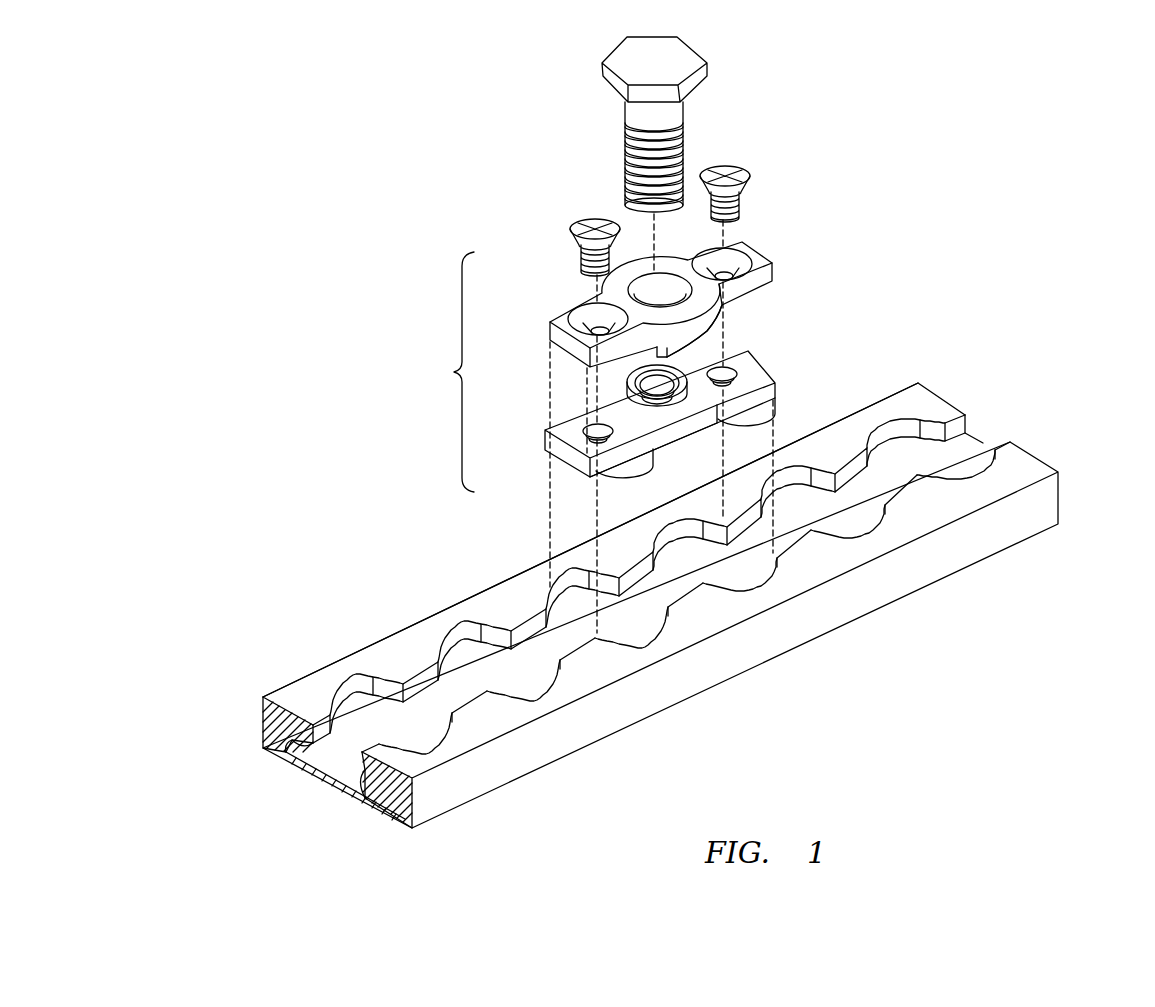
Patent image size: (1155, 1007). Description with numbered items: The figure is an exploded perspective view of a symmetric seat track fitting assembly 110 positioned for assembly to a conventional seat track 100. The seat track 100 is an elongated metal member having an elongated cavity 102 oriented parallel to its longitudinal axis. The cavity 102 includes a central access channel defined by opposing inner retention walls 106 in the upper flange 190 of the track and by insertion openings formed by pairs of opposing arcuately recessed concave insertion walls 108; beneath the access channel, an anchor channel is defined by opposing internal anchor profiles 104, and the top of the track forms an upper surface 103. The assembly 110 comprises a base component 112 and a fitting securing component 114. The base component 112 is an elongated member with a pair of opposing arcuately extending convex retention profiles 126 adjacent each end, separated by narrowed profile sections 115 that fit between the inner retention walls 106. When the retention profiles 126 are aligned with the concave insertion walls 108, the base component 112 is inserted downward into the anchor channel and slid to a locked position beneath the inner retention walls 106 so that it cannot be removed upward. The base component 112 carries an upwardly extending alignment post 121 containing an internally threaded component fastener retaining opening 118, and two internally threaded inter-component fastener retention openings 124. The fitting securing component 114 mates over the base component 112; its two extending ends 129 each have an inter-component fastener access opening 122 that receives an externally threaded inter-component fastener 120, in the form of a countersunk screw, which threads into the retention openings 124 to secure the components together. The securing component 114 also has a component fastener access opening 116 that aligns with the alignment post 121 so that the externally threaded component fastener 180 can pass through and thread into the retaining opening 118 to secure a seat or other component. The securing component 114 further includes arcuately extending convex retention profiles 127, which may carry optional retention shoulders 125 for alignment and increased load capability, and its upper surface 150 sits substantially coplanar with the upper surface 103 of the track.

The seat track 100 is at (1033, 473).
The elongated cavity 102 is at (328, 765).
The upper surface 103 is at (838, 566).
The internal anchor profiles 104 is at (292, 742).
The inner retention walls 106 is at (322, 726).
The arcuately recessed concave insertion walls 108 is at (363, 680).
The symmetric seat track fitting assembly 110 is at (440, 372).
The base component 112 is at (765, 362).
The fitting securing component 114 is at (765, 258).
The narrowed profile sections 115 is at (680, 416).
The component fastener access opening 116 is at (667, 273).
The component fastener retaining opening 118 is at (655, 392).
The inter-component fasteners 120 is at (572, 228).
The alignment post 121 is at (700, 402).
The inter-component fastener access openings 122 is at (575, 310).
The inter-component fastener retention openings 124 is at (582, 430).
The retention shoulders 125 is at (660, 348).
The arcuately extending convex retention profiles 126 is at (560, 408).
The arcuately extending convex retention profiles 127 is at (641, 262).
The extending ends 129 is at (577, 317).
The upper surface 150 is at (675, 298).
The component fastener 180 is at (623, 117).
The upper flange 190 is at (262, 716).